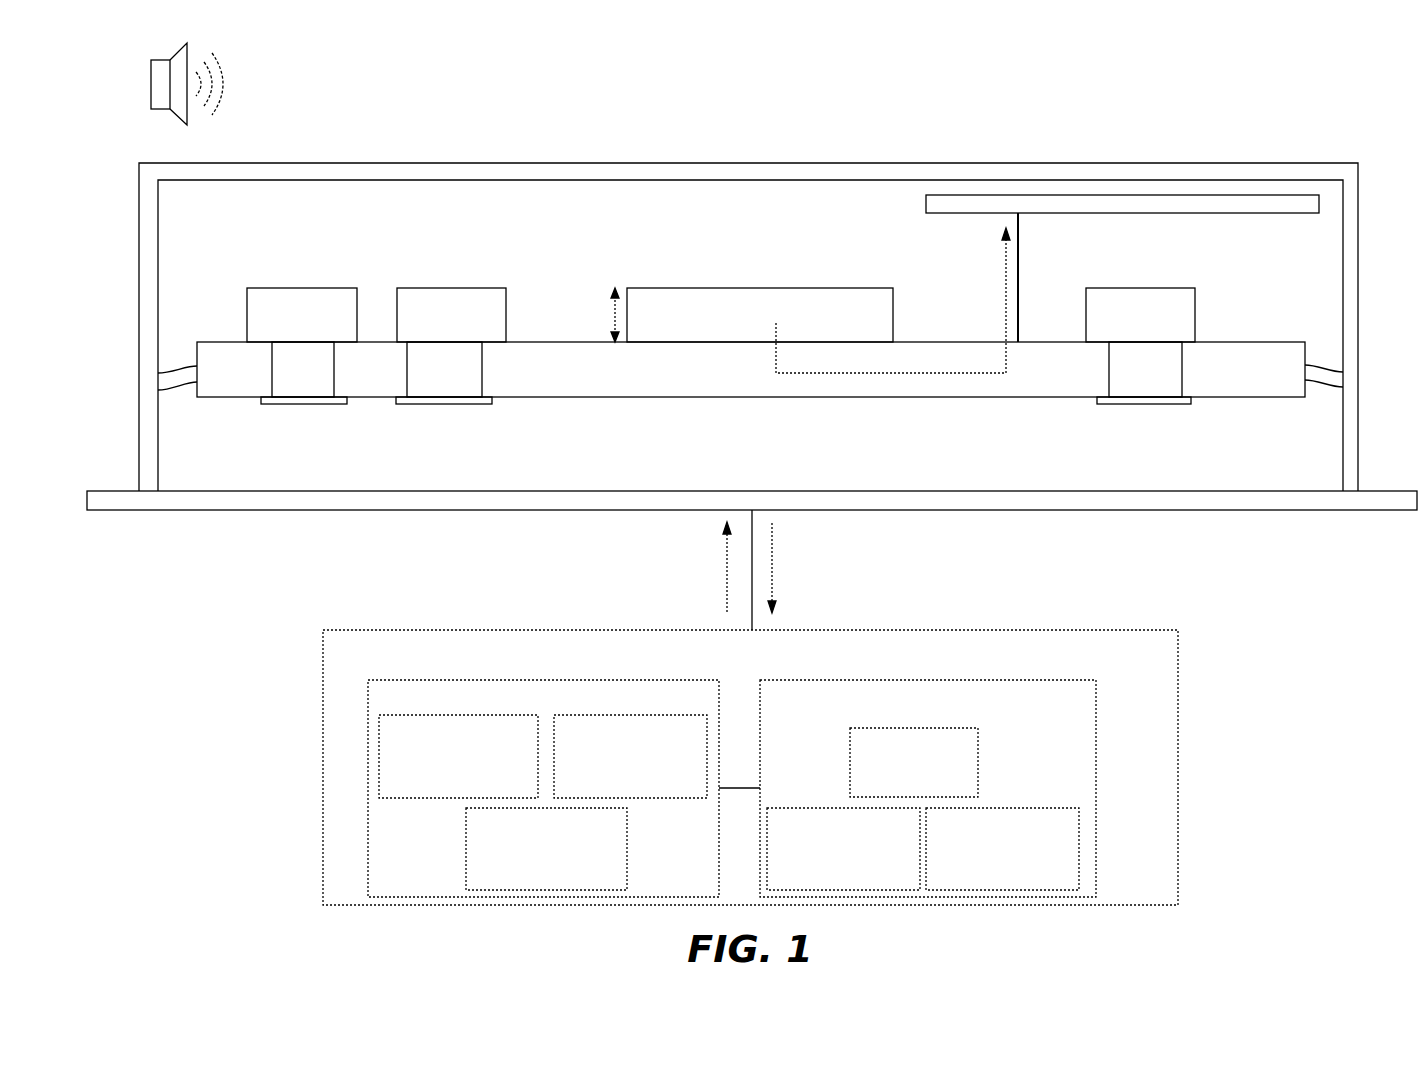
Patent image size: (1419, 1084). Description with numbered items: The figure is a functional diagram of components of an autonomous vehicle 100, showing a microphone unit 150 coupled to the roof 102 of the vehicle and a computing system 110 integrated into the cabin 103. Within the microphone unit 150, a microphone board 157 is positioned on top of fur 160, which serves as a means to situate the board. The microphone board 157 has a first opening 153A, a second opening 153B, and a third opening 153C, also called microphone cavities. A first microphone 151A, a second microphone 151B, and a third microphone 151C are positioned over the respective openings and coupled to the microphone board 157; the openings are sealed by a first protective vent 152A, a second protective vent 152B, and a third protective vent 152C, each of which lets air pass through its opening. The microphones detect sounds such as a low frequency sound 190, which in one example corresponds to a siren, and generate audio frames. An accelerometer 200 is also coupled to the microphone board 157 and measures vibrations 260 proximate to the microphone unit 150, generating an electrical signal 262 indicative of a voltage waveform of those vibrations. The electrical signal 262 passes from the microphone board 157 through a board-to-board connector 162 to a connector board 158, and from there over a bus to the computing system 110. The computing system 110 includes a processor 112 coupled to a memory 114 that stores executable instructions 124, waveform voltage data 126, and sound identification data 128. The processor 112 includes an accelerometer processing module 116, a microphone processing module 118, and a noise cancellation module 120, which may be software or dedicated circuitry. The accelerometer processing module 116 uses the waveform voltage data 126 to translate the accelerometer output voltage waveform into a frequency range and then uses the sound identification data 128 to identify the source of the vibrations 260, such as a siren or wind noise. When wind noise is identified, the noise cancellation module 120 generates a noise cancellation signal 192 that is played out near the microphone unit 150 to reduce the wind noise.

The autonomous vehicle 100 is at (1244, 686).
The roof 102 is at (94, 491).
The cabin 103 is at (325, 588).
The computing system 110 is at (750, 767).
The processor 112 is at (543, 788).
The memory 114 is at (928, 788).
The accelerometer processing module 116 is at (458, 756).
The microphone processing module 118 is at (630, 756).
The noise cancellation module 120 is at (546, 849).
The instructions 124 is at (914, 762).
The waveform voltage data 126 is at (843, 849).
The sound identification data 128 is at (1002, 849).
The microphone unit 150 is at (722, 163).
The first microphone 151A is at (303, 288).
The second microphone 151B is at (452, 288).
The third microphone 151C is at (1150, 288).
The first protective vent 152A is at (308, 404).
The second protective vent 152B is at (446, 404).
The third protective vent 152C is at (1143, 404).
The first opening 153A is at (303, 369).
The second opening 153B is at (444, 369).
The third opening 153C is at (1145, 369).
The microphone board 157 is at (222, 342).
The connector board 158 is at (1210, 195).
The fur 160 is at (751, 399).
The board-to-board connector 162 is at (1020, 248).
The low frequency sound 190 is at (217, 110).
The noise cancellation signal 192 is at (726, 580).
The accelerometer 200 is at (763, 288).
The vibrations 260 is at (612, 313).
The electrical signal 262 is at (1005, 314).